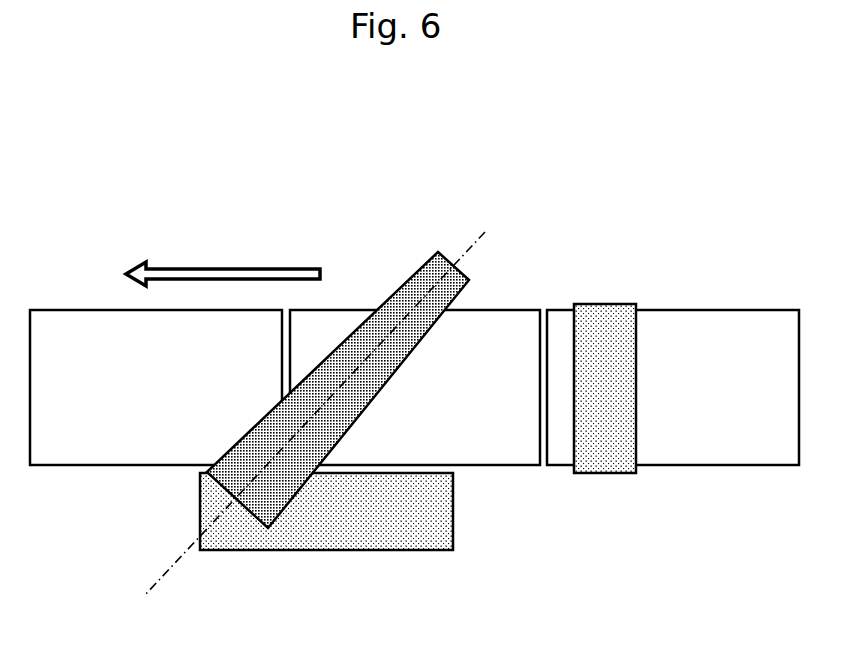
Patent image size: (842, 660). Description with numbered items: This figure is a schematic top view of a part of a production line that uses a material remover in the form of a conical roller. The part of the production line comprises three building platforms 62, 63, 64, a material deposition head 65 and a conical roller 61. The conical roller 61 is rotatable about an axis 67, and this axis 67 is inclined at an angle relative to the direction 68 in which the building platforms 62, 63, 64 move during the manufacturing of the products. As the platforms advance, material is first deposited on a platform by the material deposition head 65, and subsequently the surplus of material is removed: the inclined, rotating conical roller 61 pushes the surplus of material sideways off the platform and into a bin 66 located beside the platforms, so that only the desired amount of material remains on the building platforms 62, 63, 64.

The conical roller 61 is at (397, 285).
The building platform 62 is at (98, 306).
The building platform 63 is at (501, 470).
The building platform 64 is at (741, 471).
The material deposition head 65 is at (606, 299).
The bin 66 is at (406, 556).
The axis 67 is at (493, 237).
The direction 68 is at (218, 266).